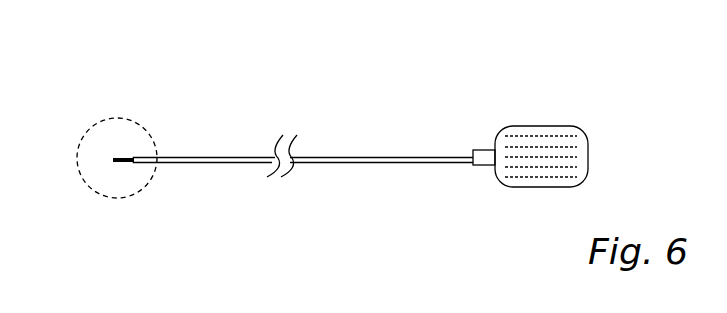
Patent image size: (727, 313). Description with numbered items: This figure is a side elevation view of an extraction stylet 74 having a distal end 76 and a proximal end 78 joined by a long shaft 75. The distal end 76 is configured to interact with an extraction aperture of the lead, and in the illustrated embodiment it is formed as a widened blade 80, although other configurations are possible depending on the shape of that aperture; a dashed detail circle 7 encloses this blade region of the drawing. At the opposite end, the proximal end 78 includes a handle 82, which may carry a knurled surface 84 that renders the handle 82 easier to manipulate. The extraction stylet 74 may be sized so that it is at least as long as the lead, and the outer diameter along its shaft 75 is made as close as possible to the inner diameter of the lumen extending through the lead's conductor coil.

The detail view circle (FIG. 7 reference) 7 is at (80, 173).
The extraction stylet 74 is at (252, 93).
The shaft 75 is at (332, 155).
The distal end 76 is at (118, 221).
The proximal end 78 is at (495, 209).
The widened blade 80 is at (118, 157).
The handle 82 is at (545, 126).
The knurled surface 84 is at (543, 157).